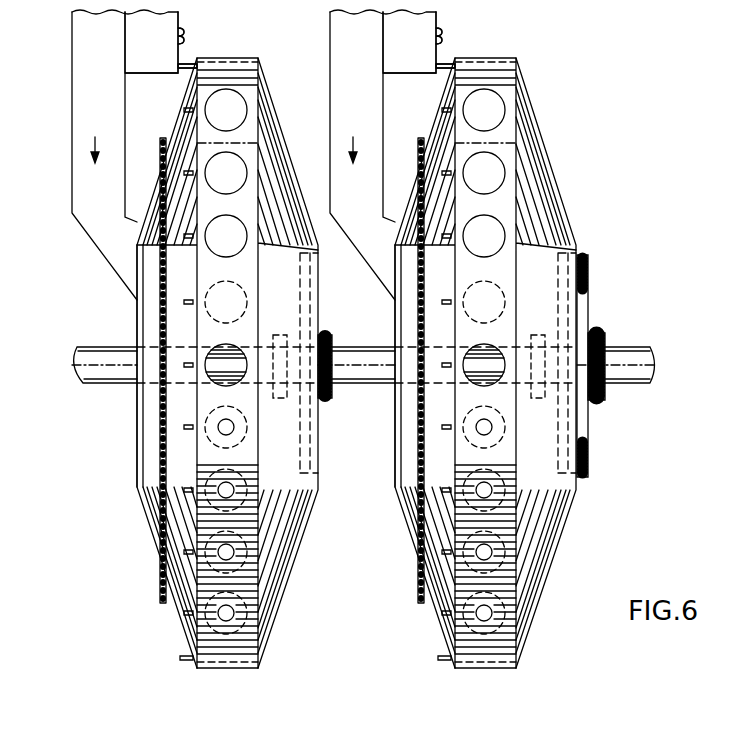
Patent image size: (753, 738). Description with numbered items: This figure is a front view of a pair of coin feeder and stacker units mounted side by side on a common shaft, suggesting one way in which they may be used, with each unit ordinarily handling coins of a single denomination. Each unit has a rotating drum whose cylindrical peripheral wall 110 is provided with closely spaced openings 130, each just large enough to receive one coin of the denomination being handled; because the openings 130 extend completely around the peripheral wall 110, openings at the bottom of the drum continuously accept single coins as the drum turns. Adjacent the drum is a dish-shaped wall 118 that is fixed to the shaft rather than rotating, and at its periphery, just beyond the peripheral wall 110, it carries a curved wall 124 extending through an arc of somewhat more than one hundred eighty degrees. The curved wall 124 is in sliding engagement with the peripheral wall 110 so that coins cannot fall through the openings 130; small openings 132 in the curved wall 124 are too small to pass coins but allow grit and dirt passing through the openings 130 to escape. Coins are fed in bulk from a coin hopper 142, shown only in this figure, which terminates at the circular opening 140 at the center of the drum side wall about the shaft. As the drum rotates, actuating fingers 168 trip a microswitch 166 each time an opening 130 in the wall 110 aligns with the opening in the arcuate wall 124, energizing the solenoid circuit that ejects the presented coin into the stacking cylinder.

The cylindrical peripheral wall 110 is at (250, 73).
The dish-shaped wall 118 is at (290, 590).
The curved wall 124 is at (244, 668).
The openings 130 is at (243, 230).
The small openings 132 is at (230, 607).
The circular opening 140 is at (142, 326).
The coin hopper 142 is at (73, 133).
The microswitch 166 is at (153, 63).
The actuating fingers 168 is at (193, 67).